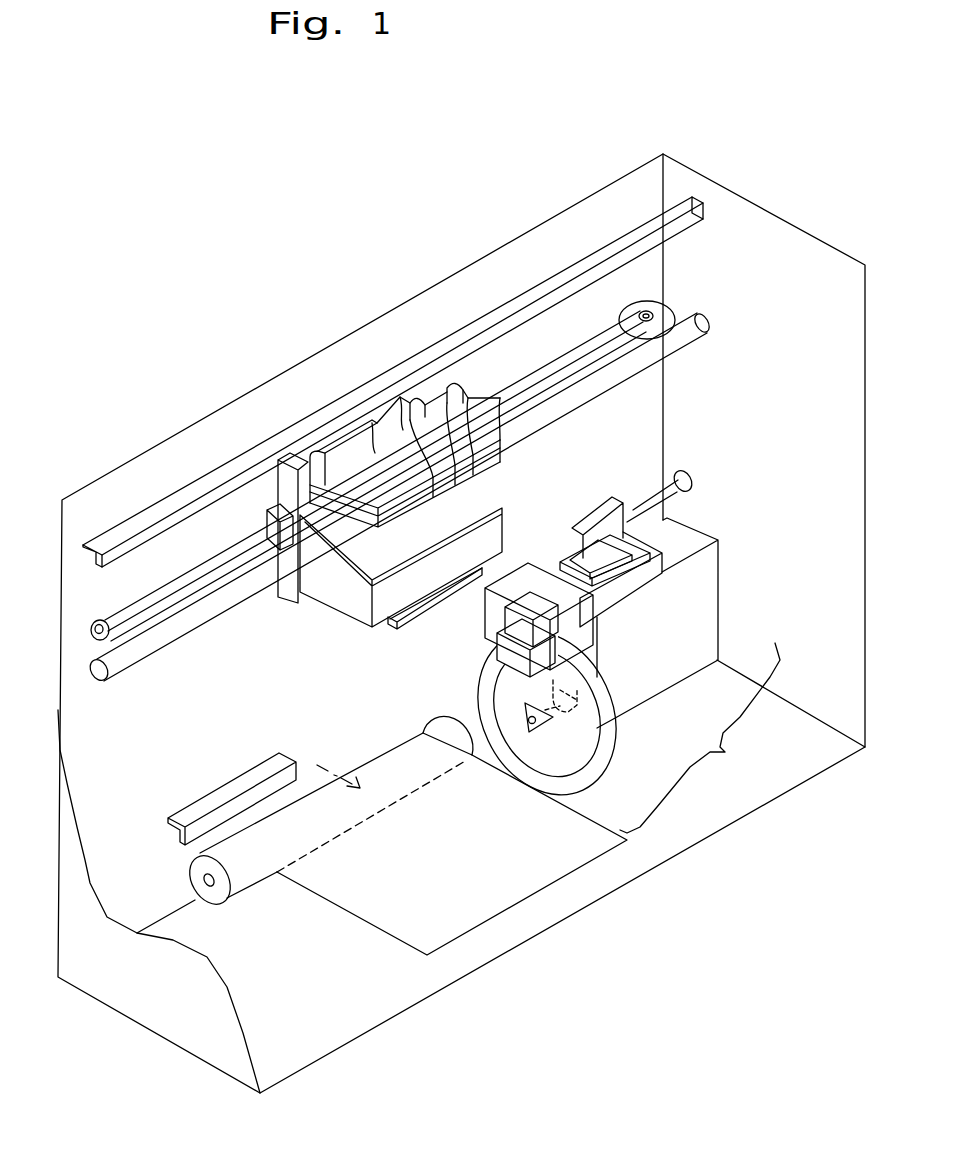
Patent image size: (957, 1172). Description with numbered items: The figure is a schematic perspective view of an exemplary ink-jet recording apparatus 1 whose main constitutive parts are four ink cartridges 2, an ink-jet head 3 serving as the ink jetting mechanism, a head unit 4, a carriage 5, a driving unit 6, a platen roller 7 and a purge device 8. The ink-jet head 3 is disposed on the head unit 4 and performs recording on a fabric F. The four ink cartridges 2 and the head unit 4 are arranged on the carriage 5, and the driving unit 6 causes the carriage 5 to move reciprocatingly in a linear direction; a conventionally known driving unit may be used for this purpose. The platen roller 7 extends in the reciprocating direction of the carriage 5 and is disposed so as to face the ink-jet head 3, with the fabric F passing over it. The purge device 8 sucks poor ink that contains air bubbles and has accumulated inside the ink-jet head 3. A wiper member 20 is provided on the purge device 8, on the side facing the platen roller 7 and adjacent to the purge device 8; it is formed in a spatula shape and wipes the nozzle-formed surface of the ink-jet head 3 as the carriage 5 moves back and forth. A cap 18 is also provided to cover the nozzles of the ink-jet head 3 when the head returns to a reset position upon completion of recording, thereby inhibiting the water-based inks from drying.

The ink-jet recording apparatus 1 is at (358, 187).
The ink cartridge 2 is at (407, 437).
The ink-jet head 3 is at (442, 593).
The head unit 4 is at (432, 624).
The carriage 5 is at (287, 480).
The driving unit 6 is at (688, 182).
The platen roller 7 is at (247, 870).
The purge device 8 is at (700, 738).
The cap 18 is at (700, 538).
The wiper member 20 is at (520, 630).
The fabric F is at (415, 928).